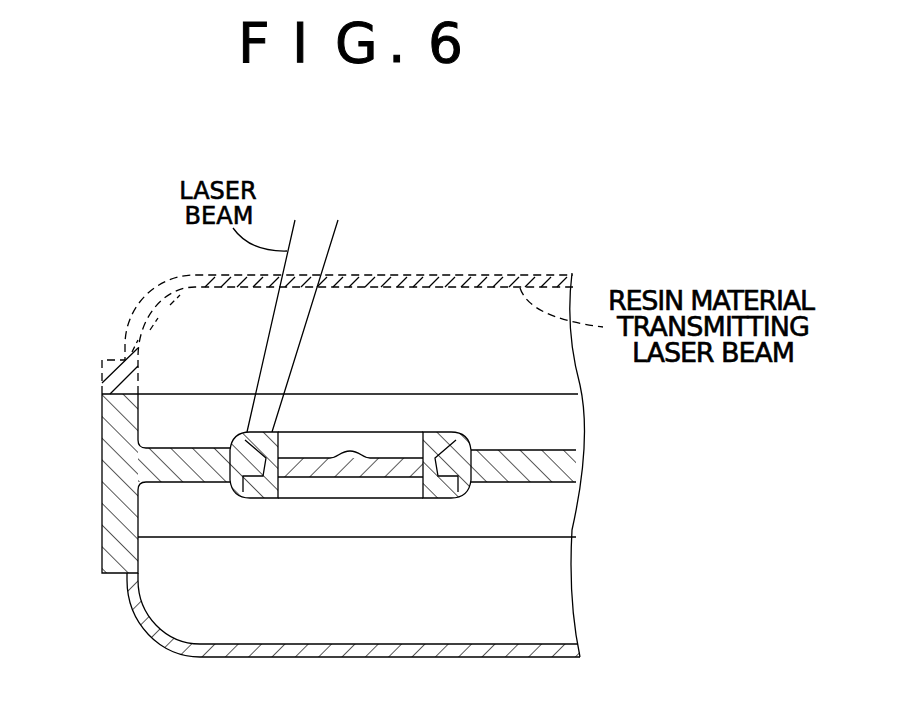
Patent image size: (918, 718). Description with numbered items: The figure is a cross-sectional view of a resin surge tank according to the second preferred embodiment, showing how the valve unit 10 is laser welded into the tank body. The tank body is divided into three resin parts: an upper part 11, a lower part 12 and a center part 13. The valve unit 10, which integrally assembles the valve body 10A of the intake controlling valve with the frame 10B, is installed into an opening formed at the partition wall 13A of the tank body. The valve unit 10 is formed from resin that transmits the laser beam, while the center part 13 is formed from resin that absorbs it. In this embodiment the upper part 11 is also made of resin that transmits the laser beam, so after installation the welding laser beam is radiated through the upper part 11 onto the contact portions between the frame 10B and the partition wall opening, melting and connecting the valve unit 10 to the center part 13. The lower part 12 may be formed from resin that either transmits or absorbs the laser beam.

The valve unit 10 is at (346, 432).
The valve body 10A is at (345, 477).
The frame 10B is at (257, 498).
The upper part 11 is at (507, 270).
The lower part 12 is at (130, 610).
The center part 13 is at (100, 453).
The partition wall 13A is at (168, 458).